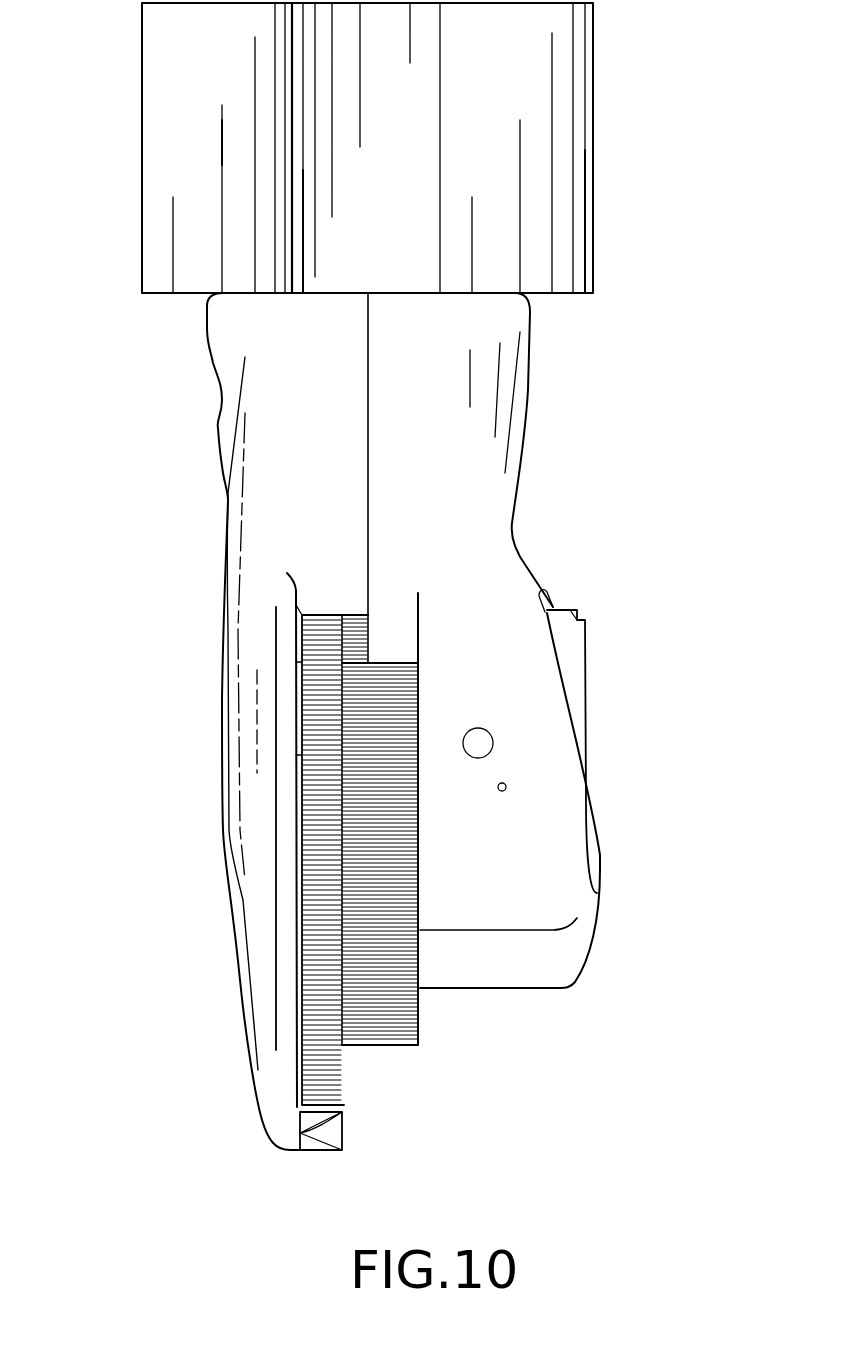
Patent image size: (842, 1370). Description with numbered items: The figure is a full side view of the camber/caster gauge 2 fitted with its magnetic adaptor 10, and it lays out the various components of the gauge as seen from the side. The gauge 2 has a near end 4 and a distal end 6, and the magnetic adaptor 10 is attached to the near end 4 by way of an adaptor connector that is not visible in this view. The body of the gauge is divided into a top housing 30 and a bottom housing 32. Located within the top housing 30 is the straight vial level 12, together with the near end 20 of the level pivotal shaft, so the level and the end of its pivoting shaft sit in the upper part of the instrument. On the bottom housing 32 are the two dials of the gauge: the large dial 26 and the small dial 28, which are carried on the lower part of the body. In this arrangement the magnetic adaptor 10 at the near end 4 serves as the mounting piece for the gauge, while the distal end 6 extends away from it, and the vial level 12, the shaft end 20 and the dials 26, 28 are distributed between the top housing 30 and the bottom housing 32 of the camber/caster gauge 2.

The camber/caster gauge 2 is at (583, 490).
The near end 4 is at (207, 328).
The distal end 6 is at (560, 988).
The magnetic adaptor 10 is at (591, 128).
The straight vial level 12 is at (575, 662).
The near end of the level pivotal shaft 20 is at (483, 743).
The large dial 26 is at (347, 1103).
The small dial 28 is at (420, 1045).
The top housing 30 is at (587, 925).
The bottom housing 32 is at (227, 877).